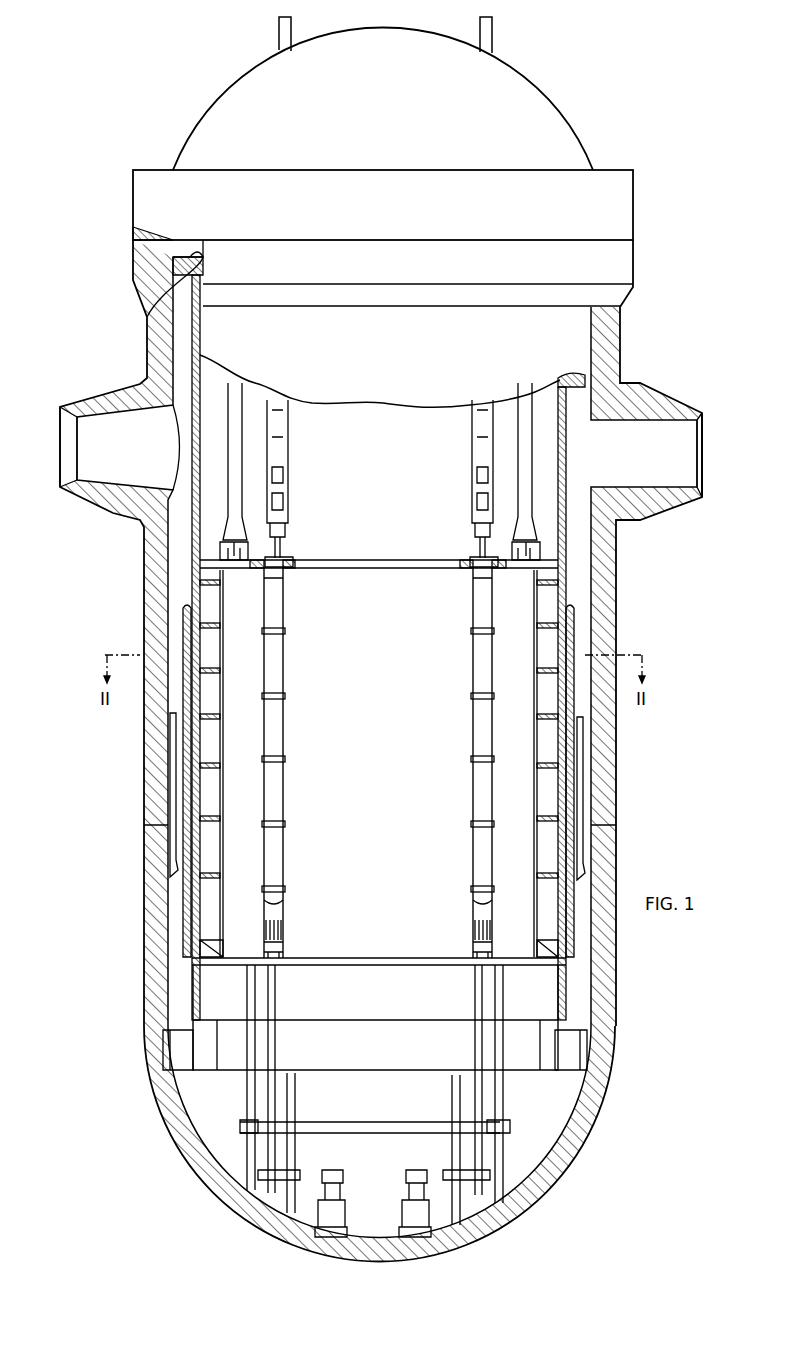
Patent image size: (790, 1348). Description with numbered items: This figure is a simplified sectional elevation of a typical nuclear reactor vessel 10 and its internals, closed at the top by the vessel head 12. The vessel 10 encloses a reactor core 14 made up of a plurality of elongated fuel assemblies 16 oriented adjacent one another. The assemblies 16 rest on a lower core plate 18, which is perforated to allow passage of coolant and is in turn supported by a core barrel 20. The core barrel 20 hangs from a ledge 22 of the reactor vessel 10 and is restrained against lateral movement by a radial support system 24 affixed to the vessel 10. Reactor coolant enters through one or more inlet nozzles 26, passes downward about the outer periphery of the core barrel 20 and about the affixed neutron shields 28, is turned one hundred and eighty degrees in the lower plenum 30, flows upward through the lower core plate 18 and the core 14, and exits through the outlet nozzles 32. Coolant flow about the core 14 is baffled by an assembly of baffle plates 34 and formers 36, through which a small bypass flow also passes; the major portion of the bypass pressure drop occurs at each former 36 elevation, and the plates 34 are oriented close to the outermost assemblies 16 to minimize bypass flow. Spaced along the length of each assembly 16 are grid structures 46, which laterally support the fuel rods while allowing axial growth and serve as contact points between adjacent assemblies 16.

The nuclear reactor vessel 10 is at (620, 580).
The vessel head 12 is at (143, 205).
The reactor core 14 is at (370, 748).
The fuel assembly 16 is at (285, 720).
The lower core plate 18 is at (342, 962).
The core barrel 20 is at (193, 520).
The ledge 22 is at (150, 303).
The radial support system 24 is at (163, 1050).
The inlet nozzle 26 is at (90, 500).
The neutron shield 28 is at (183, 603).
The lower plenum 30 is at (382, 1103).
The outlet nozzle 32 is at (653, 393).
The baffle plate 34 is at (222, 583).
The former 36 is at (223, 621).
The grid structure 46 is at (283, 760).